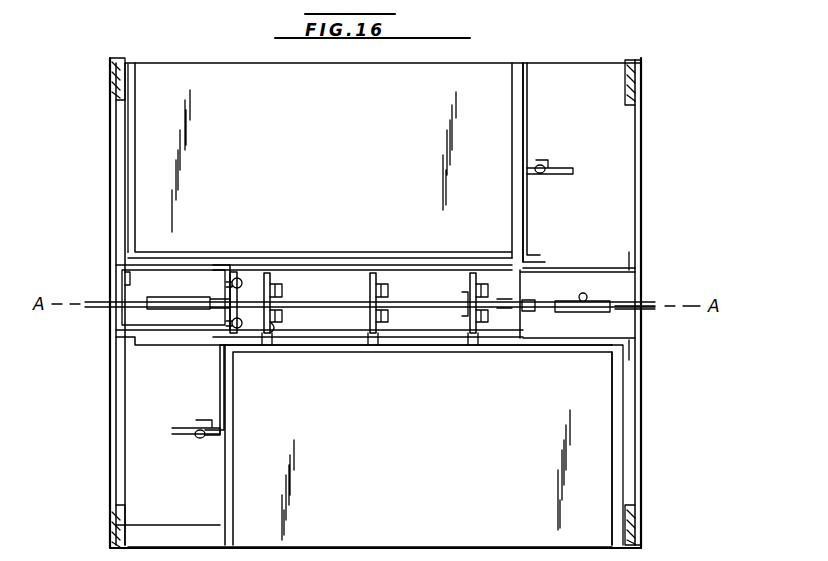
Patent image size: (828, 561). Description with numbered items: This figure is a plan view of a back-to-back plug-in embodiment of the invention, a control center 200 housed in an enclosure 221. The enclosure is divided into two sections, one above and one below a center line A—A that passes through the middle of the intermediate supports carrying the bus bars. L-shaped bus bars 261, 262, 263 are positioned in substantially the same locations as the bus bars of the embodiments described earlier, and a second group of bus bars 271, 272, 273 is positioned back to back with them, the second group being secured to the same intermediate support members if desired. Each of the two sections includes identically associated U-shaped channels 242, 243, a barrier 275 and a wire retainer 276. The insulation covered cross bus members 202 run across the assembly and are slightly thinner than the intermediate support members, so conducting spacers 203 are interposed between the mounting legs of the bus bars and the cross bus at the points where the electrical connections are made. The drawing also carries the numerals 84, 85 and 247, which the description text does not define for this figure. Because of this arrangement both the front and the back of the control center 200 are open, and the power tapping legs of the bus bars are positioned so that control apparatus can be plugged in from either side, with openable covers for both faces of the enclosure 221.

The control center 200 is at (677, 162).
The enclosure 221 is at (641, 193).
The glass panel 247 is at (366, 166).
The cross bus members 202 is at (352, 312).
The conducting spacers 203 is at (466, 293).
The coupling plate 84 is at (240, 278).
The coupling housing 85 is at (225, 292).
The bus bar 271 is at (278, 276).
The bus bar 272 is at (386, 276).
The bus bar 273 is at (478, 270).
The L-shaped bus bar 261 is at (270, 337).
The L-shaped bus bar 262 is at (372, 337).
The L-shaped bus bar 263 is at (473, 337).
The U-shaped channel 243 is at (590, 254).
The U-shaped channel 242 is at (200, 340).
The barrier 275 is at (530, 205).
The wire retainer 276 is at (560, 168).